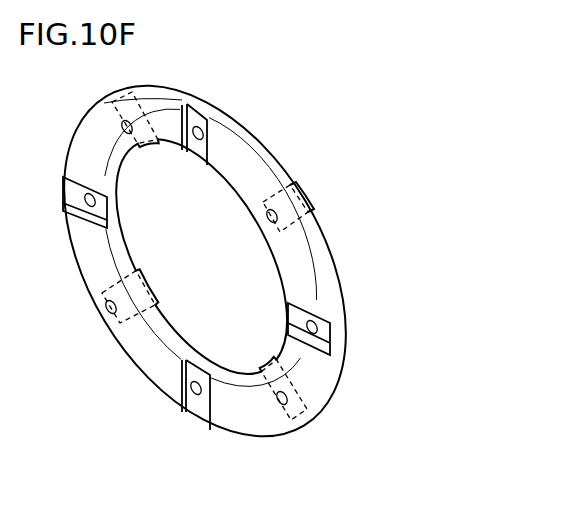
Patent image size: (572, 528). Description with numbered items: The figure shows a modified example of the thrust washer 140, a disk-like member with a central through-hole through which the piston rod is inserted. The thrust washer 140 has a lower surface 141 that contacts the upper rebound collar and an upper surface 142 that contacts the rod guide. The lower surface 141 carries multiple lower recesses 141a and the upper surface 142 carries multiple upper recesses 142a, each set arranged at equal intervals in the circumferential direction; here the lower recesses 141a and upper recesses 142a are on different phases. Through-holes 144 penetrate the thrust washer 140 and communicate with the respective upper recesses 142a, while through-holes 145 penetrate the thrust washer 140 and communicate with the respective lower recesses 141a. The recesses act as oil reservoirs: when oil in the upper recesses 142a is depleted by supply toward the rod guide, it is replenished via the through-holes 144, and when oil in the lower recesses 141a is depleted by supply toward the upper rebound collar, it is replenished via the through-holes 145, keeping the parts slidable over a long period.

The thrust washer 140 is at (234, 92).
The lower surface 141 is at (290, 183).
The lower recess 141a is at (300, 198).
The upper surface 142 is at (242, 165).
The upper recess 142a is at (326, 338).
The through-hole 144 is at (302, 308).
The through-hole 145 is at (278, 224).